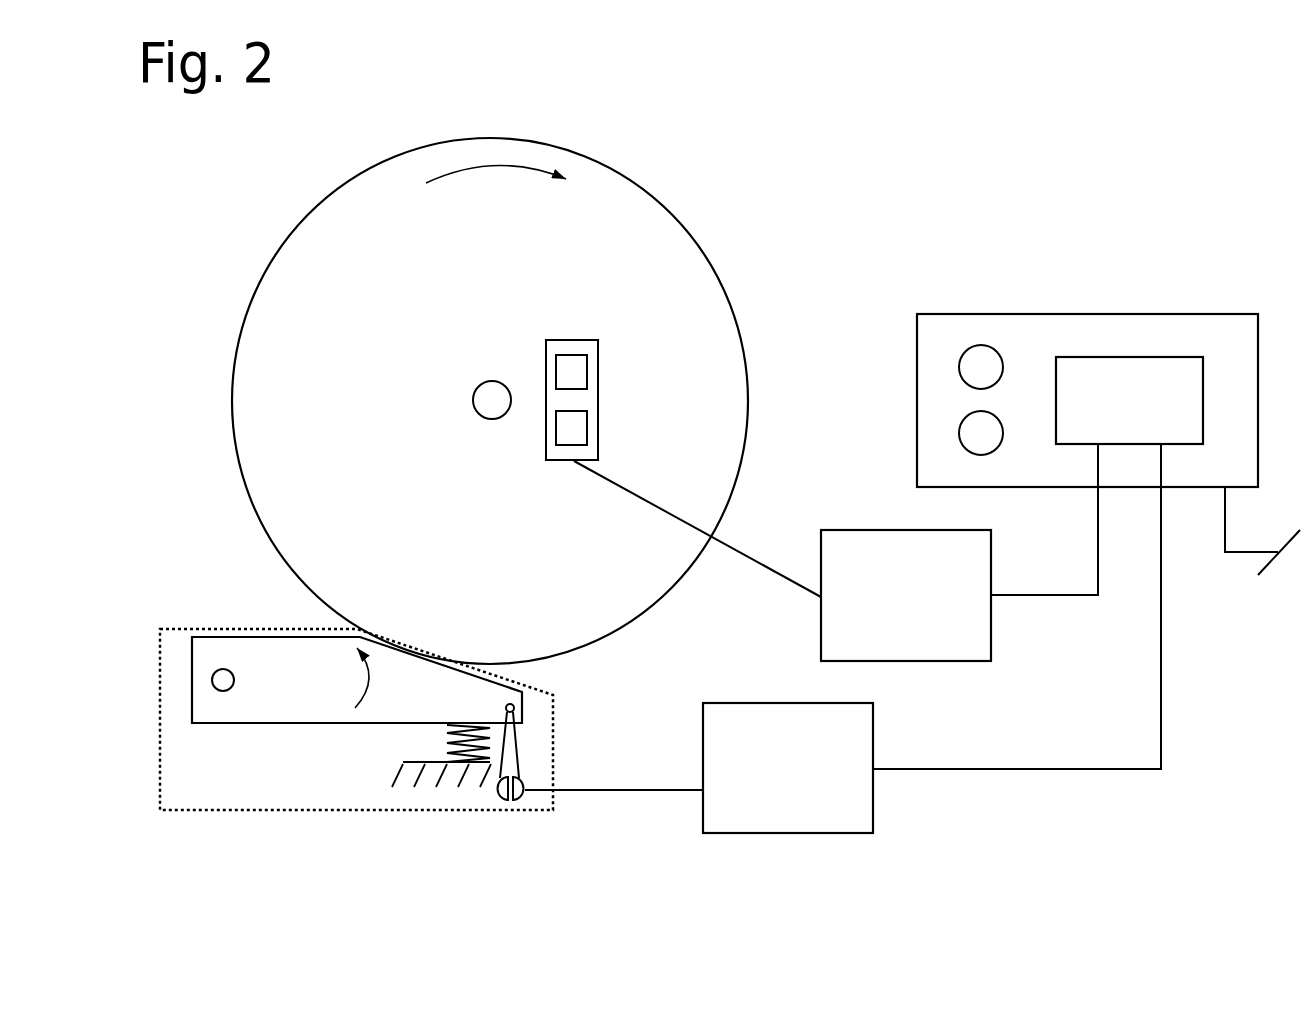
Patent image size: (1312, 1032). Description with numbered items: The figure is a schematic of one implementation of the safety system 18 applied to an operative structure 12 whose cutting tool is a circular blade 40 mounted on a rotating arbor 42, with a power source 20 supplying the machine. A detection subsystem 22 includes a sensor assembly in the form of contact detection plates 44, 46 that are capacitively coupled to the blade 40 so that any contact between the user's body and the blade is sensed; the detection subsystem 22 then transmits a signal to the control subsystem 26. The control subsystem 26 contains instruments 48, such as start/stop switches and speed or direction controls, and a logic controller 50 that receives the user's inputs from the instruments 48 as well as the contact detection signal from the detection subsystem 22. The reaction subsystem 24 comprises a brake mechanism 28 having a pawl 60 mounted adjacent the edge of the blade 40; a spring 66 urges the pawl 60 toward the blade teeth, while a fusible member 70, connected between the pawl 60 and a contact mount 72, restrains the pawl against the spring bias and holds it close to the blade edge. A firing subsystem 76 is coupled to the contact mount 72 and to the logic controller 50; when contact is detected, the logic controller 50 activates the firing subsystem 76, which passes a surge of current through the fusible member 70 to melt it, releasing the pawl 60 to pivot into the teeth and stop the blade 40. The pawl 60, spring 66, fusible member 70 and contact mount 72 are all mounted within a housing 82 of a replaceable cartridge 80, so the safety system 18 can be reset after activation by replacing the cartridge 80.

The operative structure 12 is at (728, 160).
The safety system 18 is at (1067, 205).
The power source 20 is at (1265, 545).
The detection subsystem 22 is at (966, 578).
The reaction subsystem 24 is at (820, 877).
The control subsystem 26 is at (1131, 314).
The brake mechanism 28 is at (248, 748).
The circular blade 40 is at (394, 263).
The arbor 42 is at (483, 406).
The contact detection plate 44 is at (586, 366).
The contact detection plate 46 is at (585, 421).
The instruments 48 is at (969, 439).
The logic controller 50 is at (1144, 406).
The pawl 60 is at (250, 647).
The spring 66 is at (430, 745).
The fusible member 70 is at (520, 763).
The contact mount 72 is at (503, 800).
The firing subsystem 76 is at (849, 751).
The replaceable cartridge 80 is at (202, 843).
The housing 82 is at (265, 812).